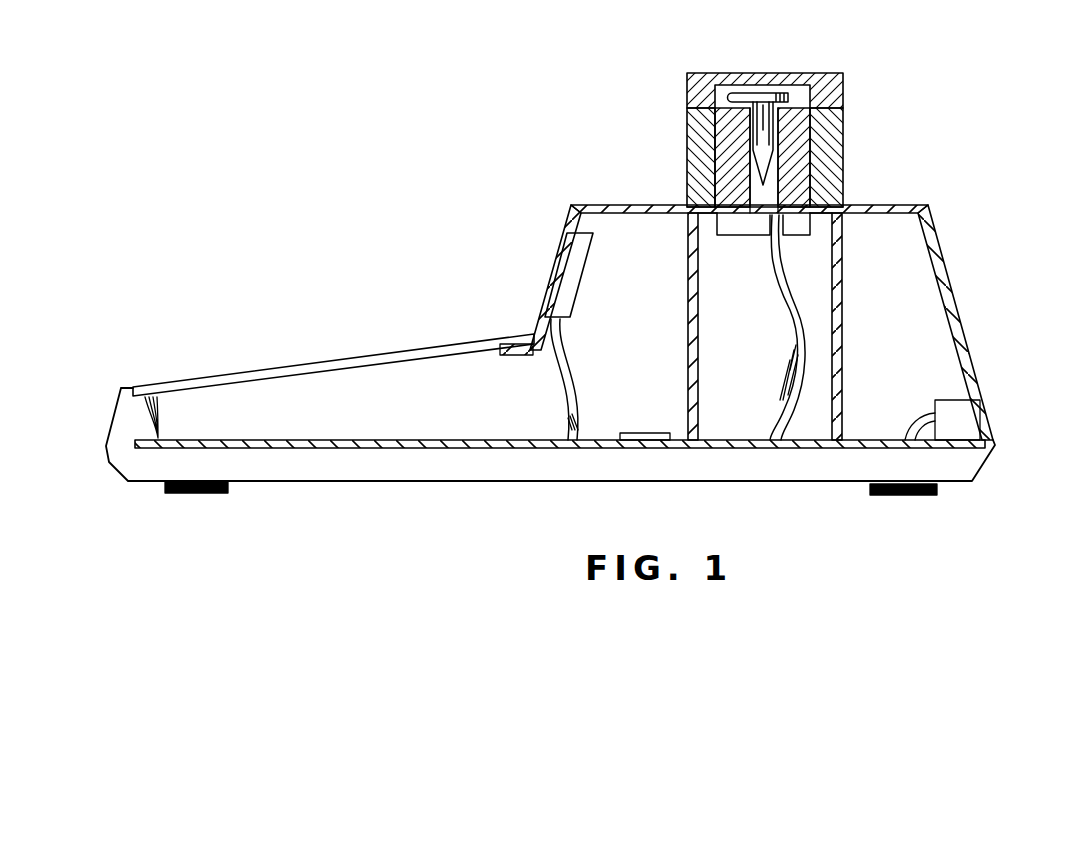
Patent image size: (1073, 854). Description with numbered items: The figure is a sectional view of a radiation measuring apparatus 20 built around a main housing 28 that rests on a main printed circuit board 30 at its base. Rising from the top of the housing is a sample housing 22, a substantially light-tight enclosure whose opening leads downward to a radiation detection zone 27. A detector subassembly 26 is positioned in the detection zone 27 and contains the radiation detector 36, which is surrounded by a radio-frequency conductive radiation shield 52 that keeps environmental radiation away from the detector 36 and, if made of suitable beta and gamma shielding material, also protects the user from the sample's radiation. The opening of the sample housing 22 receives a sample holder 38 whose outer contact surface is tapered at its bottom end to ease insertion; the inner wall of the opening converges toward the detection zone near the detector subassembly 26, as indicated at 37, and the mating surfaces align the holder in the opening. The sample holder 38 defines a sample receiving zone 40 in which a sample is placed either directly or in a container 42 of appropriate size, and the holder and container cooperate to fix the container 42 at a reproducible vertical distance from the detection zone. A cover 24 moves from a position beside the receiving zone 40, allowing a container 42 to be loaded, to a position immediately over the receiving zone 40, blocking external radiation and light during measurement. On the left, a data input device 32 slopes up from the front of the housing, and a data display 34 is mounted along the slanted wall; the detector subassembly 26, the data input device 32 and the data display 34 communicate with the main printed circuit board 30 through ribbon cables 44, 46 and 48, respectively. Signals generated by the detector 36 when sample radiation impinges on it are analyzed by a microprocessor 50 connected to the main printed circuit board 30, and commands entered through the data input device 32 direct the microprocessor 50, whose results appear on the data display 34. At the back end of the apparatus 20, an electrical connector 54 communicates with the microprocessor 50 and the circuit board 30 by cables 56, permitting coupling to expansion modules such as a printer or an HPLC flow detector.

The radiation measuring apparatus 20 is at (566, 122).
The sample housing 22 is at (860, 111).
The cover 24 is at (828, 73).
The detector subassembly 26 is at (813, 226).
The radiation detection zone 27 is at (745, 241).
The main housing 28 is at (970, 304).
The main printed circuit board 30 is at (427, 454).
The data input device 32 is at (318, 362).
The data display 34 is at (585, 262).
The radiation detector 36 is at (748, 222).
The converging inner wall 37 is at (689, 206).
The sample holder 38 is at (800, 152).
The sample receiving zone 40 is at (773, 193).
The container 42 is at (763, 97).
The ribbon cable 44 is at (795, 346).
The ribbon cable 46 is at (567, 384).
The ribbon cable 48 is at (162, 412).
The microprocessor 50 is at (648, 436).
The radiation shield 52 is at (690, 330).
The electrical connector 54 is at (962, 425).
The cables 56 is at (918, 428).